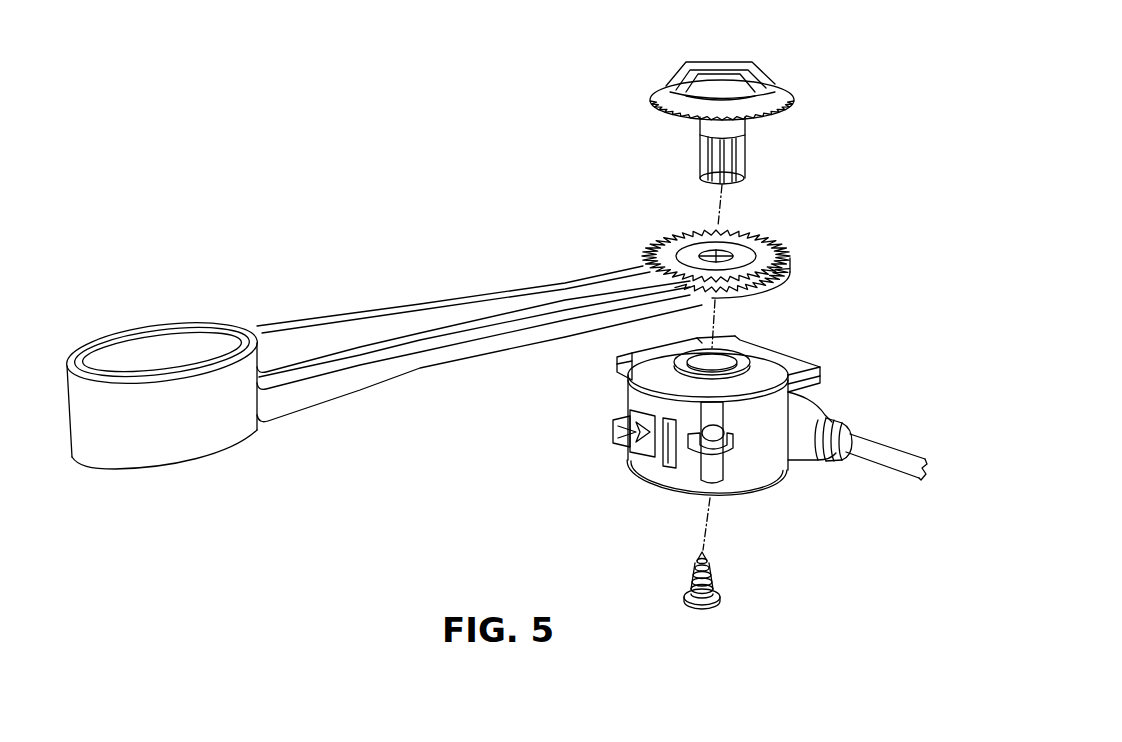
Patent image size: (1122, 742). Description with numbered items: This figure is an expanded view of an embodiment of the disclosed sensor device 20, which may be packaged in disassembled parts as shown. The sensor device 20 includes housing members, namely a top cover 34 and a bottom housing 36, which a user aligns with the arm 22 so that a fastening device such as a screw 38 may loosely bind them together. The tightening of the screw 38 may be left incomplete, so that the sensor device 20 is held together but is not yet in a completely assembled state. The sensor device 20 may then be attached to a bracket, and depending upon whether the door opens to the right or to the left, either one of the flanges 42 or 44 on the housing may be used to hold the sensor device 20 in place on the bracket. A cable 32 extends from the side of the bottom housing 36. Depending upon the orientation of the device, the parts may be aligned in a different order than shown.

The sensor device 20 is at (512, 210).
The arm 22 is at (371, 308).
The cable 32 is at (897, 450).
The top cover 34 is at (770, 80).
The bottom housing 36 is at (627, 448).
The screw 38 is at (715, 575).
The flange 42 is at (615, 365).
The flange 44 is at (800, 358).